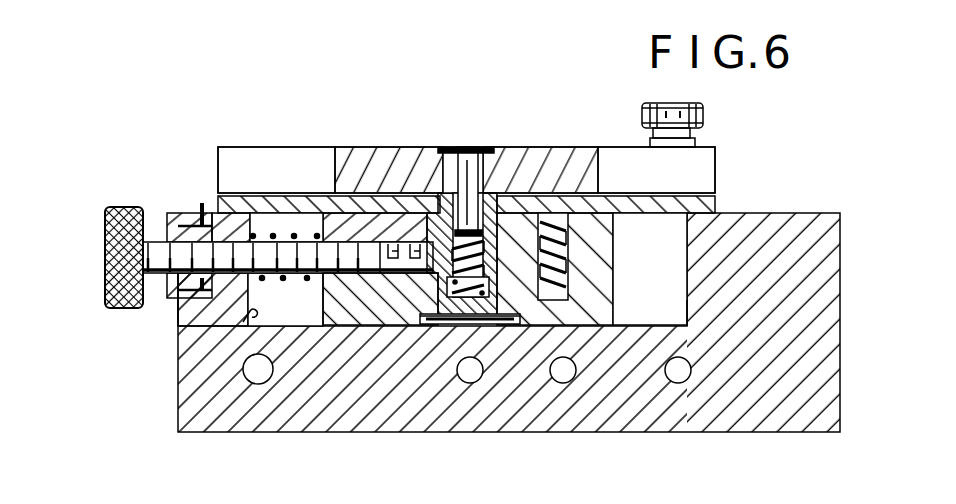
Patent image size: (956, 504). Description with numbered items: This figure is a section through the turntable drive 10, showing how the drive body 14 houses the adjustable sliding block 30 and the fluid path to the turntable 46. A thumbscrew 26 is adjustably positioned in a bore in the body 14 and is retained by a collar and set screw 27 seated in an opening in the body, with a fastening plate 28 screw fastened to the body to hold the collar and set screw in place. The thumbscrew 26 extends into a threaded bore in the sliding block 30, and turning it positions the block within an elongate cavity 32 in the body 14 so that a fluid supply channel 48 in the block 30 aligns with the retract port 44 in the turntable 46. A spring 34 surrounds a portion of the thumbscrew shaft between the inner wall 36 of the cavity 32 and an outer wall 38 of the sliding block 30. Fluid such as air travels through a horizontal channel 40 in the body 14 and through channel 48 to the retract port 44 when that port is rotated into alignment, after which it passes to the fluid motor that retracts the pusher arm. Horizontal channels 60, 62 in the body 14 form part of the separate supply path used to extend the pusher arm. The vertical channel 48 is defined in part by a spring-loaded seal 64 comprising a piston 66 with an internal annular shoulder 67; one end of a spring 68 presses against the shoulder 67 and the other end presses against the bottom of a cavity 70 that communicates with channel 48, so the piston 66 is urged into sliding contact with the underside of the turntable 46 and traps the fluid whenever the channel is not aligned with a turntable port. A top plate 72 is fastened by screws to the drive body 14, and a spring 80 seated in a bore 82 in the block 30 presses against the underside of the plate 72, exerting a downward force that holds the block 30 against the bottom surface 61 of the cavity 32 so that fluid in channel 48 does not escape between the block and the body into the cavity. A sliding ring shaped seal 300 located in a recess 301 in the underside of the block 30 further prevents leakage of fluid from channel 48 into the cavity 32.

The turntable drive 10 is at (193, 104).
The drive body 14 is at (820, 212).
The thumbscrew 26 is at (119, 207).
The collar and set screw 27 is at (202, 204).
The fastening plate 28 is at (164, 218).
The sliding block 30 is at (612, 258).
The elongate cavity 32 is at (285, 225).
The spring 34 is at (270, 236).
The inner wall 36 is at (178, 328).
The outer wall 38 is at (320, 314).
The horizontal channel 40 is at (467, 384).
The retract port 44 is at (460, 147).
The turntable 46 is at (573, 148).
The fluid supply channel 48 is at (467, 200).
The horizontal channel 60 is at (262, 384).
The bottom surface 61 is at (670, 325).
The horizontal channel 62 is at (677, 387).
The spring-loaded seal 64 is at (433, 205).
The piston 66 is at (428, 200).
The internal annular shoulder 67 is at (489, 242).
The spring 68 is at (498, 328).
The cavity 70 is at (450, 310).
The top plate 72 is at (712, 212).
The spring 80 is at (656, 148).
The bore 82 is at (568, 292).
The sliding ring shaped seal 300 is at (436, 333).
The recess 301 is at (513, 228).